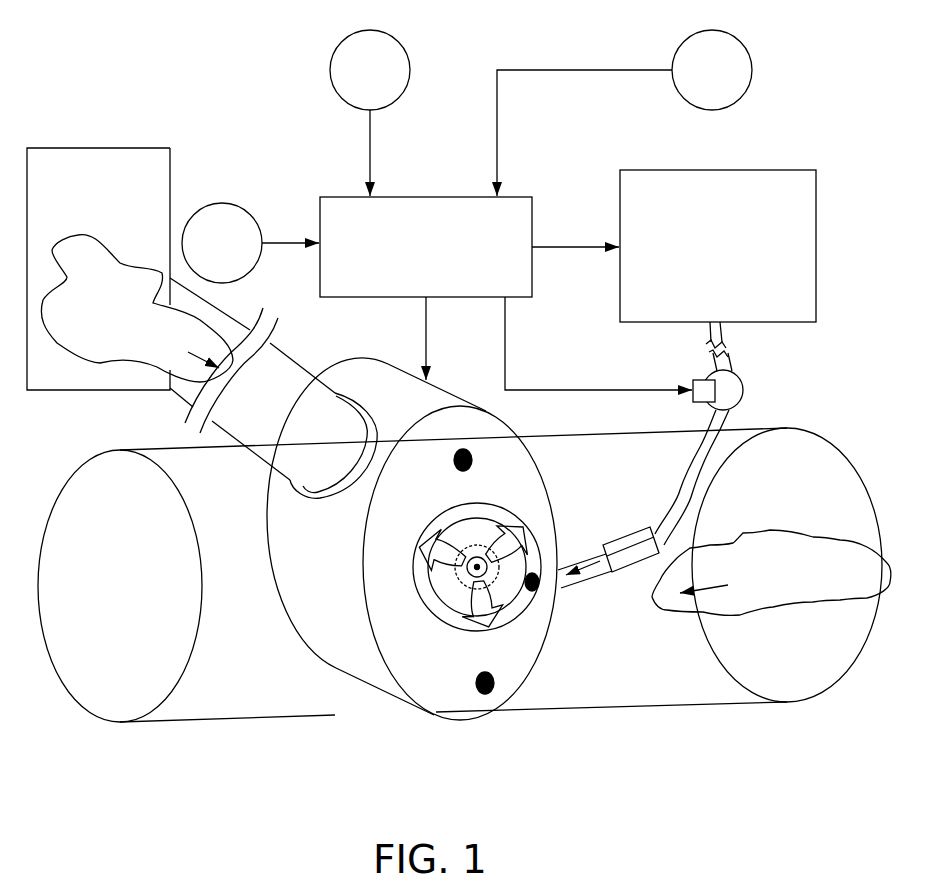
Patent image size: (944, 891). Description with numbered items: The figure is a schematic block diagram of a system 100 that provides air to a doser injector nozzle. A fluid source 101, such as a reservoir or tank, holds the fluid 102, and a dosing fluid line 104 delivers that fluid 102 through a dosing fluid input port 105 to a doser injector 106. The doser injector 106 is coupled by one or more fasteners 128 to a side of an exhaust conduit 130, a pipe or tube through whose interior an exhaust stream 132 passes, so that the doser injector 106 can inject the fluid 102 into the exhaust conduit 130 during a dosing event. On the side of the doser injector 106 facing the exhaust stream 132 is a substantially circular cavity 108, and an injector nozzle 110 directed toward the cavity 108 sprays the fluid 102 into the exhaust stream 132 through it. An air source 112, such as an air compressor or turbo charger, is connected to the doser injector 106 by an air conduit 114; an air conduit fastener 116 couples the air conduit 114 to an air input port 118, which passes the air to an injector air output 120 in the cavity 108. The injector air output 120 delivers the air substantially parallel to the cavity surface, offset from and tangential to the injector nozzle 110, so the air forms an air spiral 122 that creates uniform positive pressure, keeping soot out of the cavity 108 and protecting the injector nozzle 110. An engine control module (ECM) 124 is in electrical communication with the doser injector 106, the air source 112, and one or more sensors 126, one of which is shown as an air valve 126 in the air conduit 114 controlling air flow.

The system 100 is at (140, 66).
The fluid source 101 is at (80, 218).
The fluid 102 is at (89, 333).
The dosing fluid line 104 is at (313, 418).
The dosing fluid input port 105 is at (308, 492).
The doser injector 106 is at (362, 375).
The cavity 108 is at (446, 520).
The injector nozzle 110 is at (448, 576).
The air source 112 is at (700, 269).
The air conduit 114 is at (703, 444).
The air conduit fastener 116 is at (629, 531).
The air input port 118 is at (596, 556).
The injector air output 120 is at (537, 588).
The air spiral 122 is at (448, 597).
The engine control module (ECM) 124 is at (408, 269).
The sensors / air valve 126 is at (352, 81).
The fasteners 128 is at (455, 462).
The exhaust conduit 130 is at (98, 462).
The exhaust stream 132 is at (762, 591).